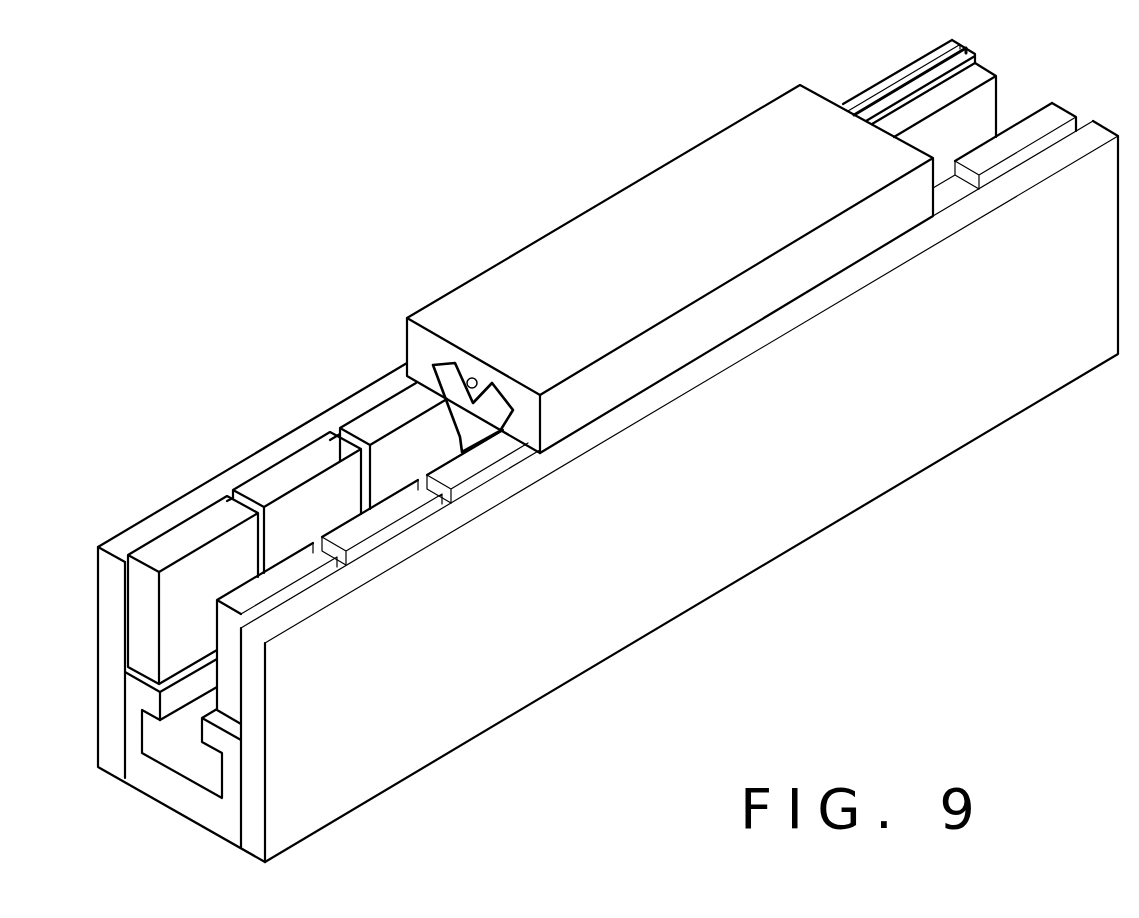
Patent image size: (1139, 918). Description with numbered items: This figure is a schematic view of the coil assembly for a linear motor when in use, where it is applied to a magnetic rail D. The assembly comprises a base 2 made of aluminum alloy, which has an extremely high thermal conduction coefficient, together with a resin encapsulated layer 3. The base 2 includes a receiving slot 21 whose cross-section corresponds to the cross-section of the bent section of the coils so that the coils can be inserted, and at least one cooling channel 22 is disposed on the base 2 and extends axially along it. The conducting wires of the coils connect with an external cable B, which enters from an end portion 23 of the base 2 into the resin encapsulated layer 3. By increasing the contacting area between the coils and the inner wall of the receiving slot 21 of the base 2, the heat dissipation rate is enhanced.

The magnetic rail D is at (440, 722).
The base 2 is at (642, 264).
The receiving slot 21 is at (434, 300).
The cooling channel 22 is at (473, 378).
The end portion 23 is at (440, 348).
The resin encapsulated layer 3 is at (460, 412).
The external cable B is at (918, 73).